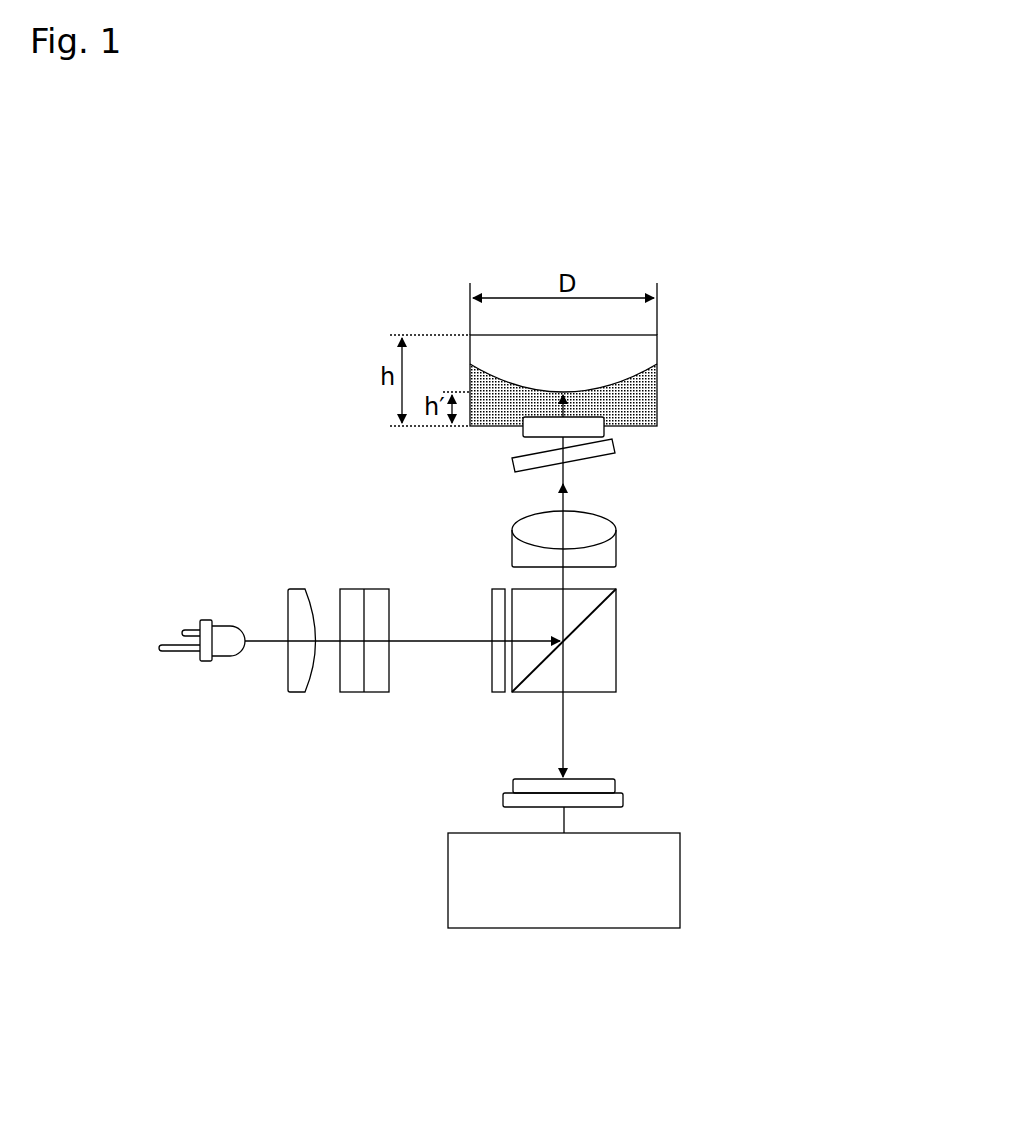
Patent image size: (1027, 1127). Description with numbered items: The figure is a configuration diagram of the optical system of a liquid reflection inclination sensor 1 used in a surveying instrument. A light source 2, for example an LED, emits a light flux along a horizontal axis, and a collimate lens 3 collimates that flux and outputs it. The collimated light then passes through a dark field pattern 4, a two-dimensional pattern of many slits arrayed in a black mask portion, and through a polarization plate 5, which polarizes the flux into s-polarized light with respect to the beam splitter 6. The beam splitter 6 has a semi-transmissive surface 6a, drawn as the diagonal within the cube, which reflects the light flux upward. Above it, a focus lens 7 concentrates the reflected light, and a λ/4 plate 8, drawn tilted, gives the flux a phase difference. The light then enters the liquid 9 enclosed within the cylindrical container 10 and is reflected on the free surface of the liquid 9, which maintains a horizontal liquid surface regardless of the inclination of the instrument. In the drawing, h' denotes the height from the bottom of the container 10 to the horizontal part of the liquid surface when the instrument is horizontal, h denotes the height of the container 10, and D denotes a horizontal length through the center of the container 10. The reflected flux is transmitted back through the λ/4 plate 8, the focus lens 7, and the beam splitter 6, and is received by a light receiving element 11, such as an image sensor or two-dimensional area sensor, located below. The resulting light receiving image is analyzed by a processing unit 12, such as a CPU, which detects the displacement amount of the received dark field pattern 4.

The liquid reflection inclination sensor 1 is at (240, 351).
The light source 2 is at (222, 657).
The collimate lens 3 is at (295, 694).
The dark field pattern 4 is at (358, 694).
The polarization plate 5 is at (498, 694).
The beam splitter 6 is at (616, 656).
The semi-transmissive surface 6a is at (588, 619).
The focus lens 7 is at (616, 540).
The λ/4 plate 8 is at (614, 444).
The liquid 9 is at (657, 399).
The container 10 is at (657, 343).
The light receiving element 11 is at (615, 786).
The processing unit 12 is at (680, 870).